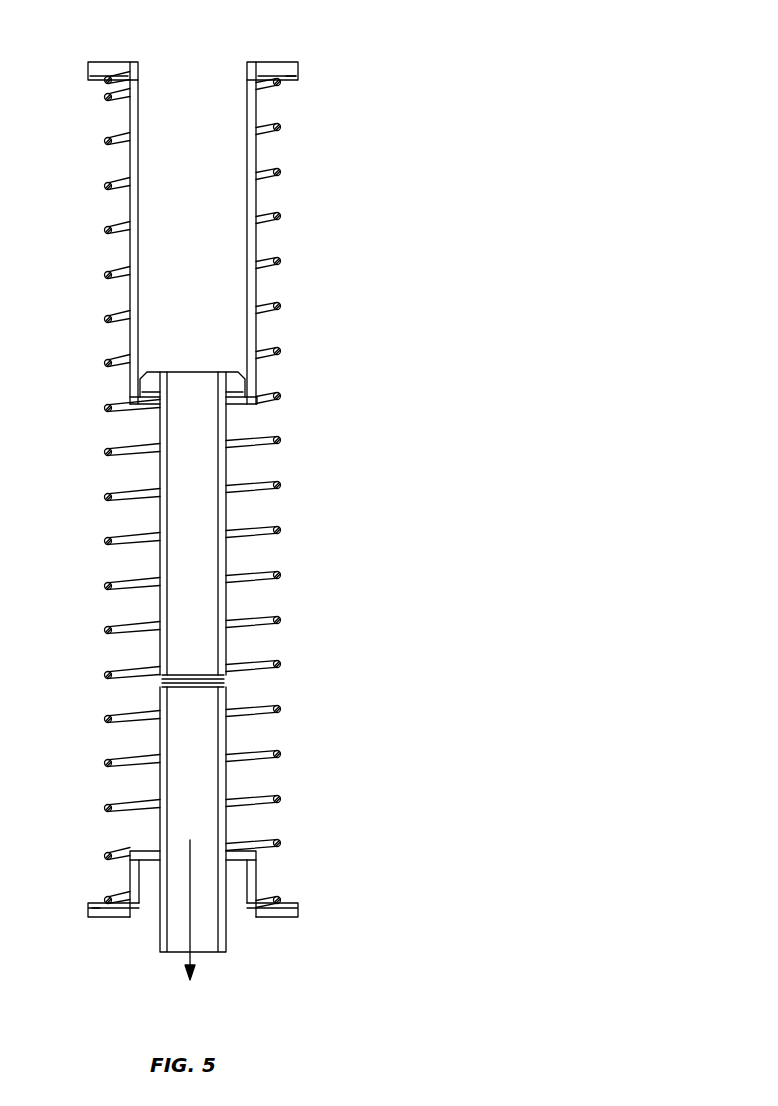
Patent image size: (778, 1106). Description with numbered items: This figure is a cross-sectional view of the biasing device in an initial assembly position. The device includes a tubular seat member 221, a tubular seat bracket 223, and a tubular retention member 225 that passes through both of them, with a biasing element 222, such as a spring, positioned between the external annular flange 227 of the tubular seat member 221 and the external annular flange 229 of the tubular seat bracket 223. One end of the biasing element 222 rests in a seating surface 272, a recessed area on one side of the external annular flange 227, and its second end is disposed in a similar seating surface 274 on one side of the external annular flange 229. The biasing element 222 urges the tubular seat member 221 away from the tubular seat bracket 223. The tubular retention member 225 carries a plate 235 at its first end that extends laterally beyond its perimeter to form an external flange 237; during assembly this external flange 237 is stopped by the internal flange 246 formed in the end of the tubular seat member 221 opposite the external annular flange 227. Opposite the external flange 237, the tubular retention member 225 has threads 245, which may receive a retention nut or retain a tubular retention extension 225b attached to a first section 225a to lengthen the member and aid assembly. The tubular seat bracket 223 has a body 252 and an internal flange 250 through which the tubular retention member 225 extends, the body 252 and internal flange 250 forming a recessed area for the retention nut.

The tubular seat member 221 is at (260, 206).
The biasing element 222 is at (282, 261).
The tubular seat bracket 223 is at (266, 892).
The tubular retention member 225 is at (297, 676).
The first section 225a is at (229, 510).
The tubular retention extension 225b is at (229, 749).
The external annular flange 227 is at (277, 62).
The external annular flange 229 is at (277, 917).
The plate 235 is at (205, 378).
The external flange 237 is at (153, 385).
The threads 245 is at (225, 673).
The internal flange 246 is at (238, 404).
The internal flange 250 is at (232, 850).
The body 252 is at (257, 869).
The seating surface 272 is at (276, 78).
The seating surface 274 is at (107, 905).